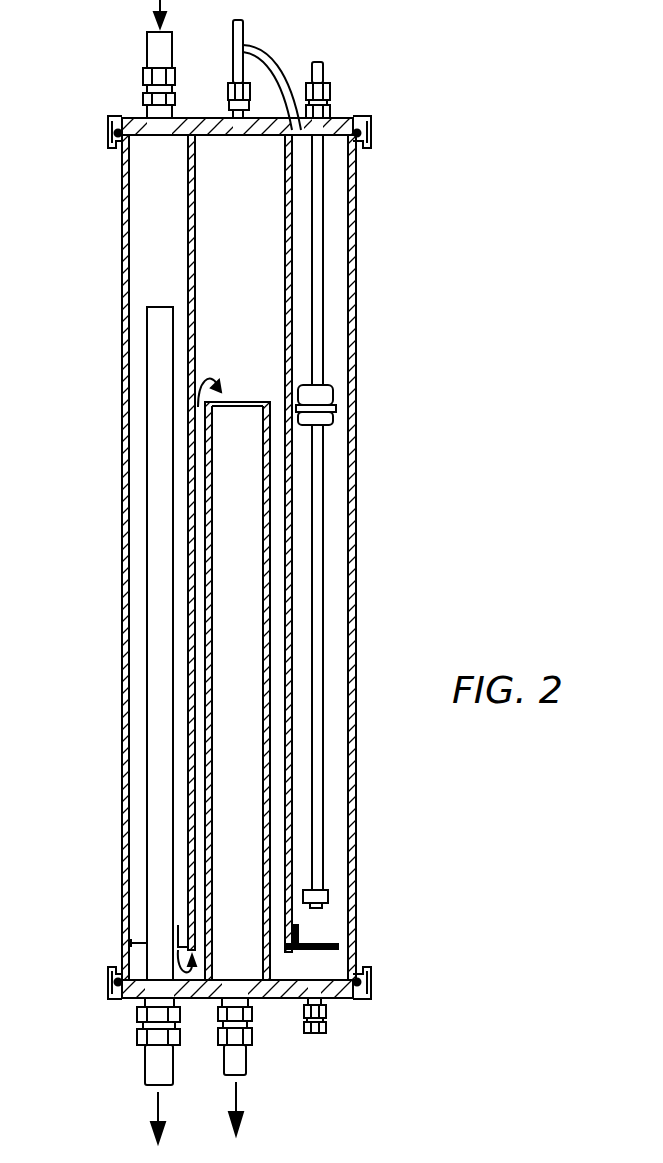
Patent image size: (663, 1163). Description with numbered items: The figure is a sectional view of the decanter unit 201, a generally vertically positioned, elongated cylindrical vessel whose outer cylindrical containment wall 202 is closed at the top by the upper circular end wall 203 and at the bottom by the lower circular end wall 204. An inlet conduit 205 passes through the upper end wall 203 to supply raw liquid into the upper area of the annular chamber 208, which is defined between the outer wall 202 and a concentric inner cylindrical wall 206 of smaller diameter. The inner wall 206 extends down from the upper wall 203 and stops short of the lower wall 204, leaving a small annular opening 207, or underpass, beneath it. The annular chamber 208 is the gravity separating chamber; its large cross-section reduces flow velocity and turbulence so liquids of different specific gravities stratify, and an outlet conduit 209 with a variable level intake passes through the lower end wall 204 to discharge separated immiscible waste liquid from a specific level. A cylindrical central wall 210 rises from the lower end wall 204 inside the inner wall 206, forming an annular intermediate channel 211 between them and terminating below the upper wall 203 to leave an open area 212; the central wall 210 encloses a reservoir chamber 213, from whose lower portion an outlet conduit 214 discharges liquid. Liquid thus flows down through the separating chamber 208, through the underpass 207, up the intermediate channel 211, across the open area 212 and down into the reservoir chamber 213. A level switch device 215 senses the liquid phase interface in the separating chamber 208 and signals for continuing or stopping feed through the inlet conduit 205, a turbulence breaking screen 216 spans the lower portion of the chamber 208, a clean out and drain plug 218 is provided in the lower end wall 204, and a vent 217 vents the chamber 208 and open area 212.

The decanter unit 201 is at (276, 559).
The outer cylindrical containment wall 202 is at (357, 207).
The upper circular end wall 203 is at (358, 122).
The lower circular end wall 204 is at (336, 1000).
The inlet conduit 205 is at (142, 69).
The inner cylindrical wall 206 is at (187, 225).
The annular opening 207 is at (270, 954).
The annular chamber 208 is at (177, 290).
The outlet conduit 209 is at (146, 873).
The cylindrical central wall 210 is at (265, 523).
The annular intermediate channel 211 is at (276, 405).
The open area 212 is at (258, 290).
The reservoir chamber 213 is at (256, 670).
The outlet conduit 214 is at (250, 1046).
The level switch device 215 is at (334, 421).
The turbulence breaking screen 216 is at (326, 942).
The vent 217 is at (232, 84).
The clean out and drain plug 218 is at (326, 1033).